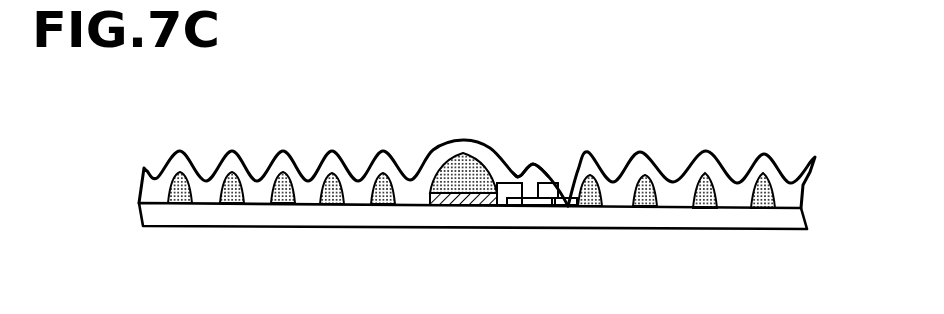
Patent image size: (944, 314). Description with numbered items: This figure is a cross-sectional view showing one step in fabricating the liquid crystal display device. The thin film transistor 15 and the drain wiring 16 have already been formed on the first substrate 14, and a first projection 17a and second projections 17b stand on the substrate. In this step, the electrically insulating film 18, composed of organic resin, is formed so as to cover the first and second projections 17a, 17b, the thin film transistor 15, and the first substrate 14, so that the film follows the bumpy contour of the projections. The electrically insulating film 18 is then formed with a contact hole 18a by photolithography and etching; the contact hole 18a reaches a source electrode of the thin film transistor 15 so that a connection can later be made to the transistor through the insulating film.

The first substrate 14 is at (803, 215).
The thin film transistor 15 is at (577, 238).
The drain wiring 16 is at (463, 205).
The first projection 17a is at (465, 143).
The second projections 17b is at (754, 172).
The electrically insulating film 18 is at (233, 151).
The contact hole 18a is at (543, 170).